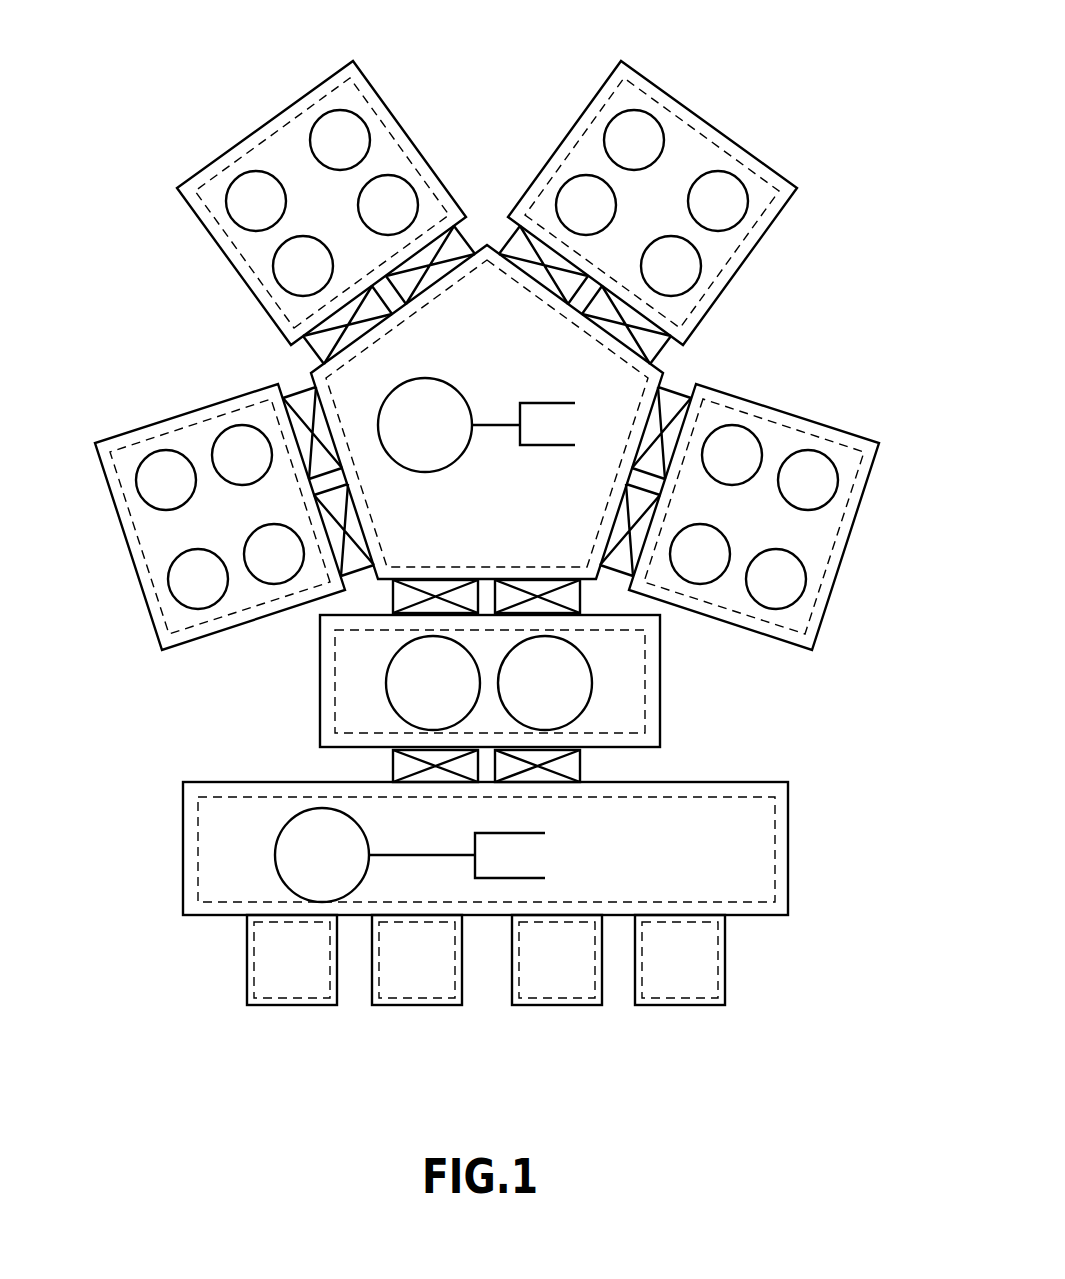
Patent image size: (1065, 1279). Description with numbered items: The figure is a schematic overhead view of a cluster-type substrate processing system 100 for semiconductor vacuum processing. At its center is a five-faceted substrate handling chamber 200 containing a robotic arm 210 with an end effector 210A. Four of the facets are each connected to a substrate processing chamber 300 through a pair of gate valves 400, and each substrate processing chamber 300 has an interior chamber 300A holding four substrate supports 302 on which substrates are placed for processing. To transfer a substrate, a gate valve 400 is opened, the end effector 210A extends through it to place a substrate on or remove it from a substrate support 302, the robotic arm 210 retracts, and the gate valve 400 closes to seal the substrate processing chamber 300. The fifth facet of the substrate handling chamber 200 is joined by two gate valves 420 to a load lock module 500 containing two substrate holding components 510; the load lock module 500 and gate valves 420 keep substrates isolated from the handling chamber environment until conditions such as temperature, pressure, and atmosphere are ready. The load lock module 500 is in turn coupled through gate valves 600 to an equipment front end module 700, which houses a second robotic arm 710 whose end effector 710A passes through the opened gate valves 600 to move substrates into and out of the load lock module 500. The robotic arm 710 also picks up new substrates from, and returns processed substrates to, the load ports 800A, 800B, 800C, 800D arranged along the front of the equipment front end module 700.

The substrate processing system 100 is at (815, 92).
The substrate handling chamber 200 is at (633, 392).
The robotic arm 210 is at (510, 455).
The end effector 210A is at (555, 403).
The substrate processing chamber 300 is at (210, 160).
The interior chamber 300A is at (260, 255).
The substrate support 302 is at (250, 207).
The gate valve 400 is at (500, 240).
The gate valve 420 is at (390, 605).
The load lock module 500 is at (662, 707).
The substrate holding component 510 is at (507, 715).
The gate valve 600 is at (388, 765).
The equipment front end module 700 is at (792, 878).
The robotic arm 710 is at (275, 883).
The end effector 710A is at (505, 848).
The load port 800A is at (252, 1005).
The load port 800B is at (378, 1005).
The load port 800C is at (598, 1005).
The load port 800D is at (722, 1005).